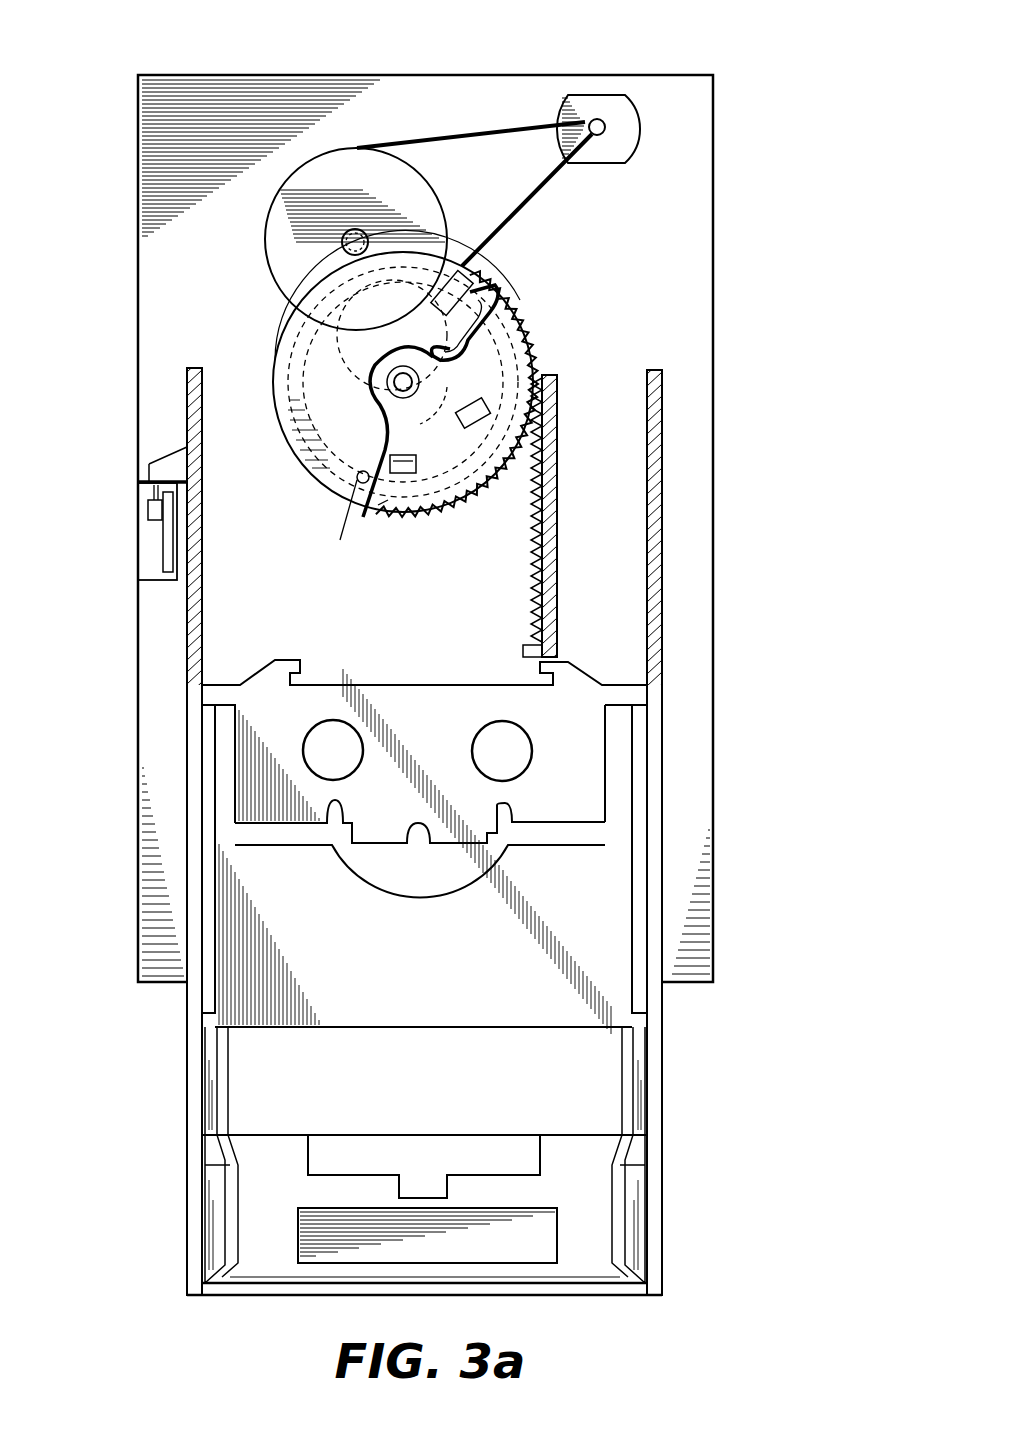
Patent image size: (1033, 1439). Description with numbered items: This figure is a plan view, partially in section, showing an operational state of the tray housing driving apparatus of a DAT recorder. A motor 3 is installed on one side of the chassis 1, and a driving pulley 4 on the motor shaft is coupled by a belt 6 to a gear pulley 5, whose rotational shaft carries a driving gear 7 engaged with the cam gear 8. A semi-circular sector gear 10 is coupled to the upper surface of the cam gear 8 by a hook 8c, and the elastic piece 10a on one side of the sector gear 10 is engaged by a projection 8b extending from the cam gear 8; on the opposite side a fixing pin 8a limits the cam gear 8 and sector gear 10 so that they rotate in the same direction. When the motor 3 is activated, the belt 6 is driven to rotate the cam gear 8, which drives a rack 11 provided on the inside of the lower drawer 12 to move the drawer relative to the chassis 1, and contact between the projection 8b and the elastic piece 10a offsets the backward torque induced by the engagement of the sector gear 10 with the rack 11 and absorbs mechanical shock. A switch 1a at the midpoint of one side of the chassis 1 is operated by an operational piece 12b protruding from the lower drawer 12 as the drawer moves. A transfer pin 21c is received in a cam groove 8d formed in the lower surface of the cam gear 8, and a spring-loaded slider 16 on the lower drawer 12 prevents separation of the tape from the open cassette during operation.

The chassis 1 is at (718, 678).
The switch 1a is at (150, 520).
The motor 3 is at (630, 123).
The driving pulley 4 is at (600, 122).
The gear pulley 5 is at (312, 173).
The belt 6 is at (487, 128).
The driving gear 7 is at (345, 240).
The cam gear 8 is at (325, 455).
The fixing pin 8a is at (362, 482).
The projection 8b is at (470, 265).
The hook 8c is at (445, 490).
The cam groove 8d is at (489, 500).
The sector gear 10 is at (512, 375).
The elastic piece 10a is at (468, 320).
The rack 11 is at (522, 628).
The lower drawer 12 is at (718, 797).
The operational piece 12b is at (167, 467).
The slider 16 is at (600, 1072).
The transfer pin 21c is at (393, 505).